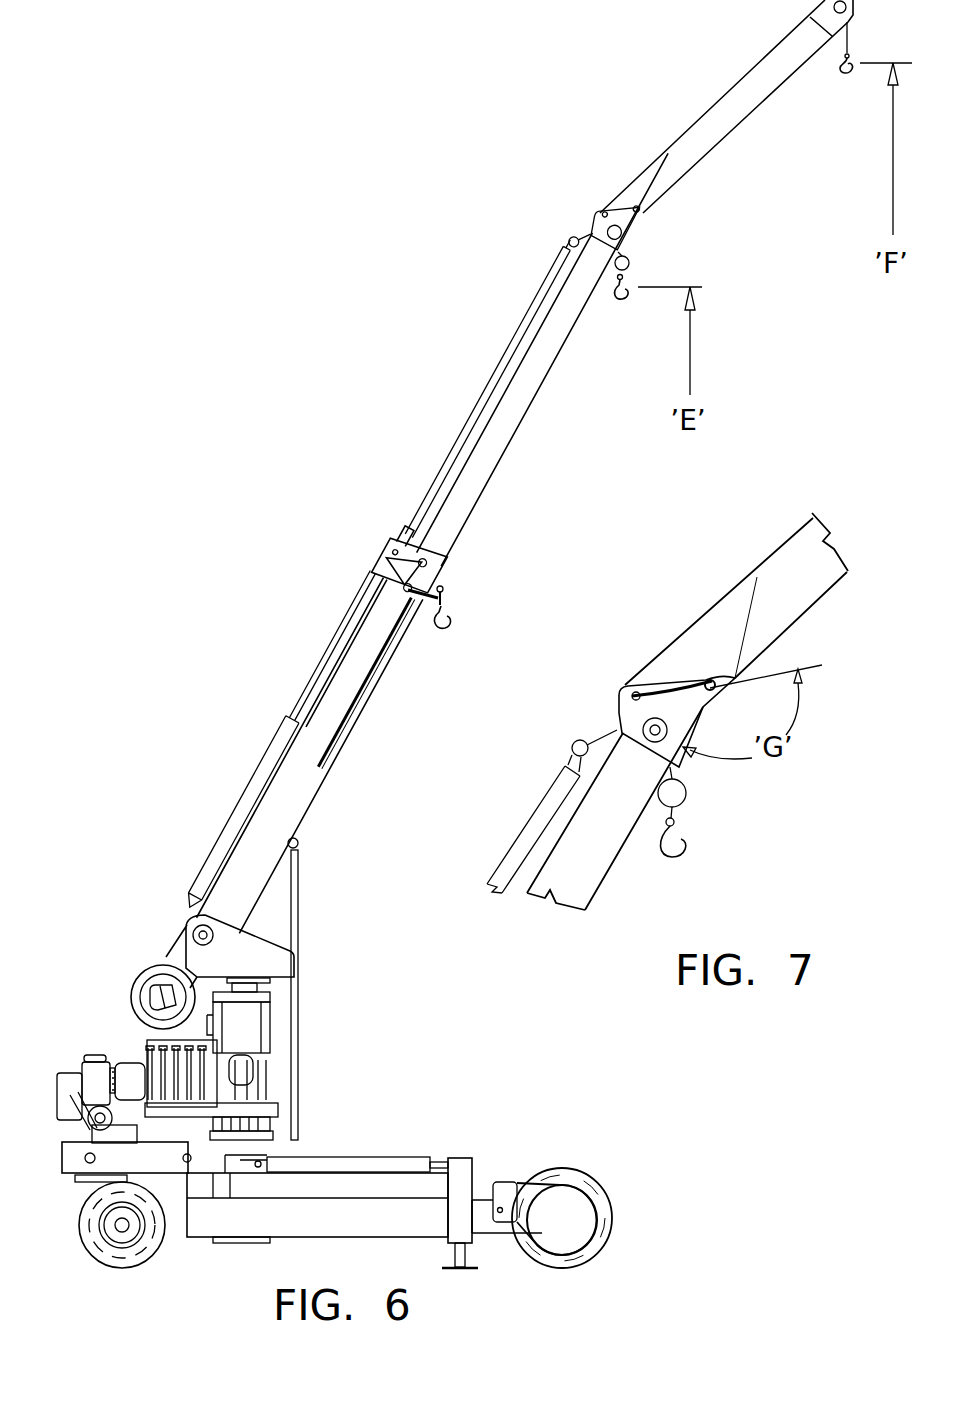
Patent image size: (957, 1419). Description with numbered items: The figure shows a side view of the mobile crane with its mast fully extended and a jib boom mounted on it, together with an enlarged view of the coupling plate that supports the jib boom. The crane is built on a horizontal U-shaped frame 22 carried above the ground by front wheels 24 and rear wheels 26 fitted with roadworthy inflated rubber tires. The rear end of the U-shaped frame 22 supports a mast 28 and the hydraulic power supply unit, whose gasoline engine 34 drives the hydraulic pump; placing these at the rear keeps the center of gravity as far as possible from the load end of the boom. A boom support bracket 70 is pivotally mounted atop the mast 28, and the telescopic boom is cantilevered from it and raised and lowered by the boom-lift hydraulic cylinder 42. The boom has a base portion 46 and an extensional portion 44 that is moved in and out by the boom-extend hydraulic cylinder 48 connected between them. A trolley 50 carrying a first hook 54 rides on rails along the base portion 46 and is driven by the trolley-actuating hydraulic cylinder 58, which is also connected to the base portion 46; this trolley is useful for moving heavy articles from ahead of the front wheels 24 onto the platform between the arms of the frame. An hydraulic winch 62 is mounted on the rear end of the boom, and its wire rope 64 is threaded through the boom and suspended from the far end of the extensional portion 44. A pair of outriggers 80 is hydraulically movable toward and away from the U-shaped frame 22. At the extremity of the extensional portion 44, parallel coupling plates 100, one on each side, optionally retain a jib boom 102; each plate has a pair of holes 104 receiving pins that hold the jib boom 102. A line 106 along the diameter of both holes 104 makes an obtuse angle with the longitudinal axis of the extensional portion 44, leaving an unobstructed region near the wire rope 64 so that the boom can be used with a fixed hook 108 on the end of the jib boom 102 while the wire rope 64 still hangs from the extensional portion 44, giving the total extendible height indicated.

In FIG. 6, the U-shaped frame 22 is at (333, 1225).
In FIG. 6, the front wheels 24 is at (612, 1222).
In FIG. 6, the rear wheels 26 is at (138, 1265).
In FIG. 6, the mast 28 is at (250, 1025).
In FIG. 6, the gasoline engine 34 is at (94, 1052).
In FIG. 6, the boom-lift hydraulic cylinder 42 is at (295, 925).
In FIG. 6, the extensional portion 44 is at (518, 428).
In FIG. 7, the extensional portion 44 is at (590, 867).
In FIG. 6, the base portion 46 is at (328, 722).
In FIG. 6, the boom-extend hydraulic cylinder 48 is at (490, 390).
In FIG. 7, the boom-extend hydraulic cylinder 48 is at (537, 813).
In FIG. 6, the trolley 50 is at (385, 555).
In FIG. 6, the first hook 54 is at (437, 630).
In FIG. 6, the trolley-actuating hydraulic cylinder 58 is at (260, 770).
In FIG. 6, the hydraulic winch 62 is at (137, 988).
In FIG. 6, the wire rope 64 is at (618, 254).
In FIG. 7, the wire rope 64 is at (670, 777).
In FIG. 6, the boom support bracket 70 is at (250, 965).
In FIG. 6, the outriggers 80 is at (390, 1183).
In FIG. 6, the coupling plates 100 is at (620, 210).
In FIG. 7, the coupling plates 100 is at (633, 720).
In FIG. 6, the jib boom 102 is at (738, 86).
In FIG. 7, the jib boom 102 is at (782, 560).
In FIG. 7, the holes 104 is at (632, 690).
In FIG. 7, the line 106 is at (823, 665).
In FIG. 6, the fixed hook 108 is at (840, 72).